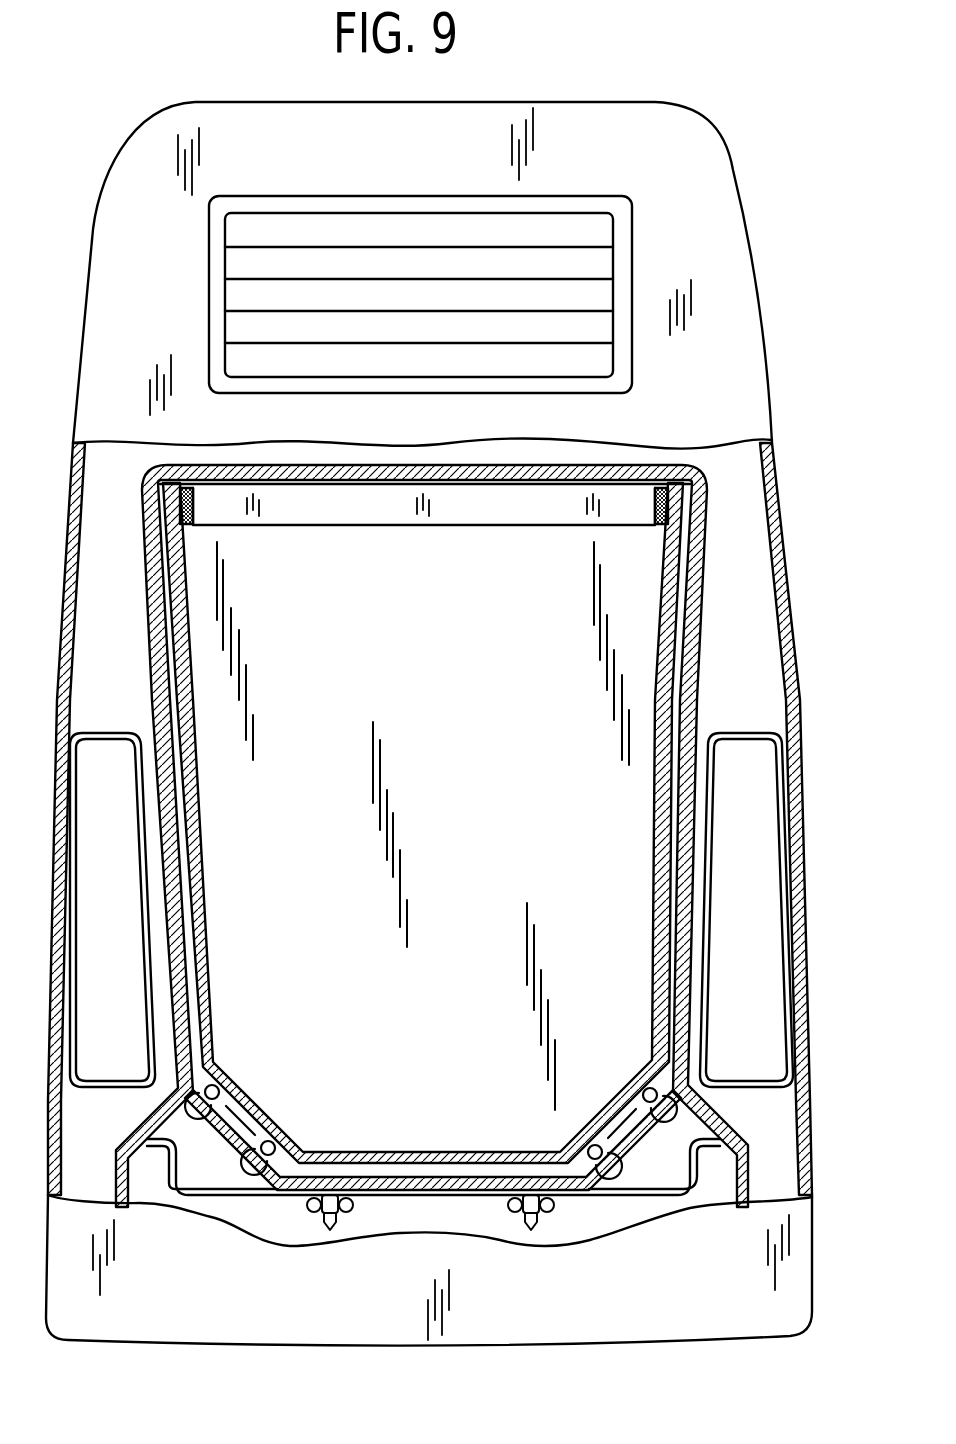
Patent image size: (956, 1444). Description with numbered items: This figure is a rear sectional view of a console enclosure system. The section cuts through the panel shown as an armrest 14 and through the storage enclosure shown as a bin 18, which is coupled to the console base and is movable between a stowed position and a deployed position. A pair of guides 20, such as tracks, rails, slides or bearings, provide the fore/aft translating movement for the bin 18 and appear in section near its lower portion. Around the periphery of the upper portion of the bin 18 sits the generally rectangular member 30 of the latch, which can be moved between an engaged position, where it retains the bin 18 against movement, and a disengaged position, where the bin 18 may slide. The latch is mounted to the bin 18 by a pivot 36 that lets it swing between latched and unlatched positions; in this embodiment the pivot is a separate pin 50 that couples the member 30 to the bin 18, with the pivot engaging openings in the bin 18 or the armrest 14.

The armrest 14 is at (263, 100).
The bin 18 is at (449, 684).
The guides 20 is at (230, 1122).
The rectangular member 30 is at (193, 519).
The pivot 36 is at (142, 508).
The pin 50 is at (165, 545).